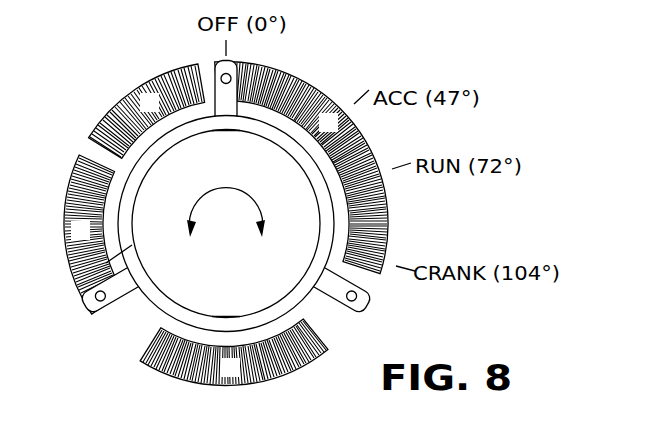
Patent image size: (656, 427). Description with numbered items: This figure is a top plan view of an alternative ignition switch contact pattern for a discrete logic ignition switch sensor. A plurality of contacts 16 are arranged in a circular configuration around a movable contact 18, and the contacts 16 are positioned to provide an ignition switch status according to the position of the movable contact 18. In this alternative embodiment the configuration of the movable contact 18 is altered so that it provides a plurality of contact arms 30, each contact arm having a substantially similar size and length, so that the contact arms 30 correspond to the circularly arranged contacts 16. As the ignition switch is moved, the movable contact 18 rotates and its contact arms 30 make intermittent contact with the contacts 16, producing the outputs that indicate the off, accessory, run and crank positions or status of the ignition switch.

The contacts 16 is at (16, 6).
The movable contact 18 is at (106, 264).
The contact arms 30 is at (231, 93).